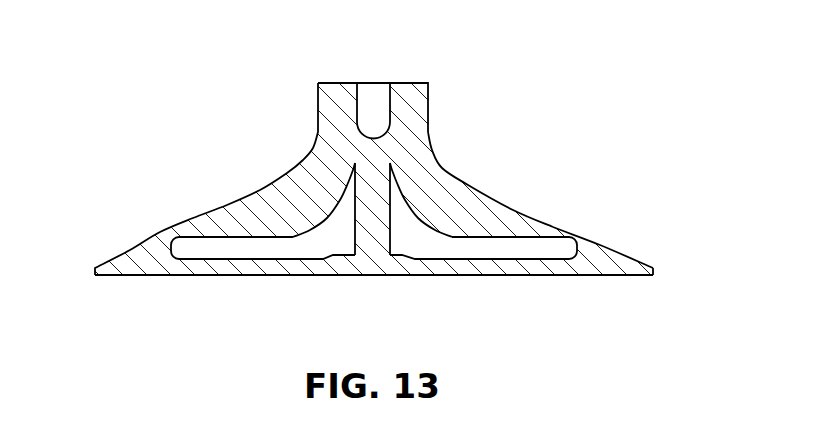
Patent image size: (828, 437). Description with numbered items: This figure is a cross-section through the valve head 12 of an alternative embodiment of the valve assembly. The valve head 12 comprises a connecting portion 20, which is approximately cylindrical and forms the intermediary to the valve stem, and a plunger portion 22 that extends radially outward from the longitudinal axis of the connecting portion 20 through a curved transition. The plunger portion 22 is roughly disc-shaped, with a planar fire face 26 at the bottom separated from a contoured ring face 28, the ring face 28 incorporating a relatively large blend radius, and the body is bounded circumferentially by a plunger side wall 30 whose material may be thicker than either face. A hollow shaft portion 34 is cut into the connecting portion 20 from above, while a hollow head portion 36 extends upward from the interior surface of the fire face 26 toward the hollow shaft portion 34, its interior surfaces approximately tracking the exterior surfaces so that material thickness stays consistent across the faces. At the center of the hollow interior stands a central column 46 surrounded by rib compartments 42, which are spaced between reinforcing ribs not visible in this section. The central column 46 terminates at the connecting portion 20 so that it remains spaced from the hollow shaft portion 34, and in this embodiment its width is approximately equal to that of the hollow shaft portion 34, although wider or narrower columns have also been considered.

The valve head 12 is at (414, 192).
The connecting portion 20 is at (430, 93).
The hollow shaft portion 34 is at (372, 98).
The ring face 28 is at (486, 190).
The plunger portion 22 is at (568, 228).
The plunger side wall 30 is at (658, 268).
The fire face 26 is at (602, 285).
The rib compartments 42 is at (207, 253).
The hollow head portion 36 is at (437, 247).
The central column 46 is at (373, 236).